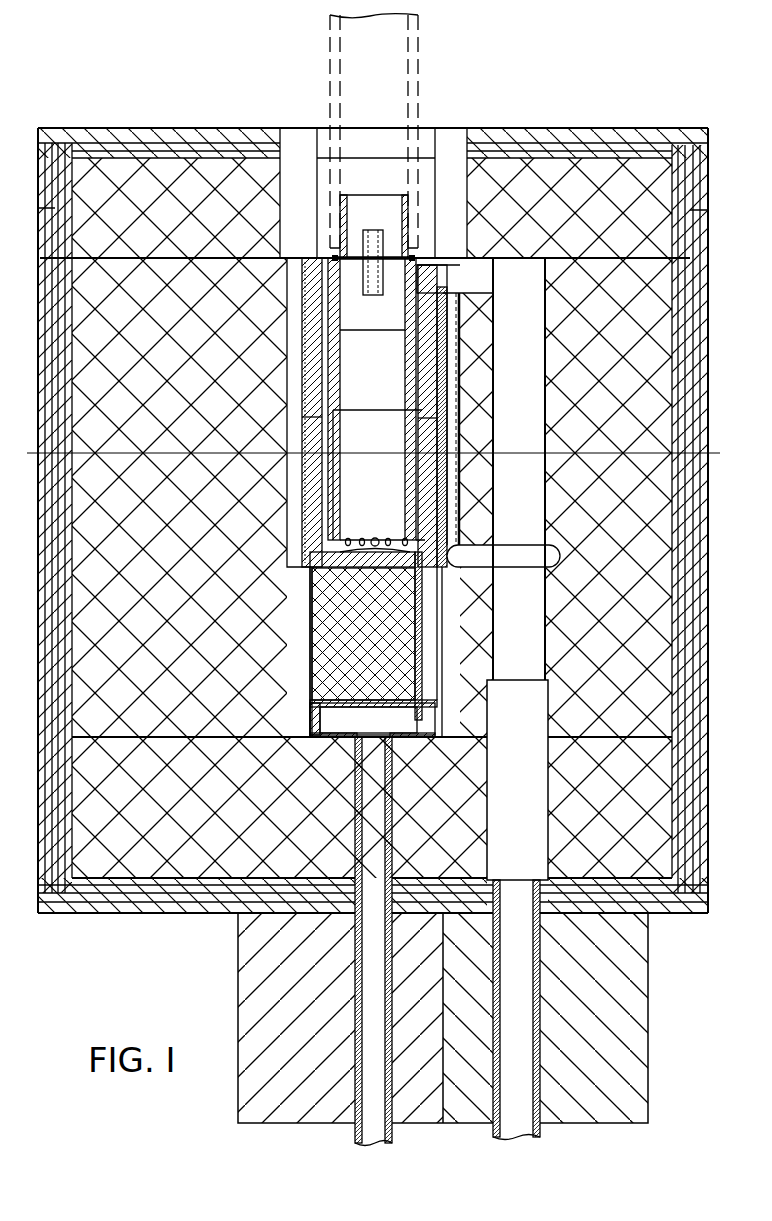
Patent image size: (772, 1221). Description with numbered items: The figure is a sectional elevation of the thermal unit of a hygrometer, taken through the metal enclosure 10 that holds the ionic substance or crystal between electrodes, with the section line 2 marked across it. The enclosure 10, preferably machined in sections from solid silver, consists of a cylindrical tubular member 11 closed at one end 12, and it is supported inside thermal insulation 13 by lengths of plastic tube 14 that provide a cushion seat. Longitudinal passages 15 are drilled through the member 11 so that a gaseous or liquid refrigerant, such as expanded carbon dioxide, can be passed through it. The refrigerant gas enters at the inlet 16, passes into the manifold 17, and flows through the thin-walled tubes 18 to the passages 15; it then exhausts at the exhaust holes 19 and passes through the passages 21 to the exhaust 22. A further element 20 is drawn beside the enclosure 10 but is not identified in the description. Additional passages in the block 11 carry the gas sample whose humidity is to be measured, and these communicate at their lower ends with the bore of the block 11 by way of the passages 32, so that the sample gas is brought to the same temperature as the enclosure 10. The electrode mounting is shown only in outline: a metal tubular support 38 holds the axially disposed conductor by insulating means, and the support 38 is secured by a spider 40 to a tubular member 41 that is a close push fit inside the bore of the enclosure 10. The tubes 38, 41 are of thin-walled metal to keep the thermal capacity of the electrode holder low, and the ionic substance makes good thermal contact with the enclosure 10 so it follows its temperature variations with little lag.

The section line 2- 2 is at (718, 487).
The metal enclosure 10 is at (372, 435).
The cylindrical tubular member 11 is at (405, 350).
The closed end 12 is at (300, 582).
The thermal insulation 13 is at (372, 518).
The plastic tube 14 is at (453, 513).
The longitudinal passages 15 is at (425, 287).
The refrigerant gas inlet 16 is at (373, 785).
The manifold 17 is at (325, 717).
The thin-walled tubes 18 is at (422, 617).
The exhaust holes 19 is at (440, 273).
The insulating block 20 is at (453, 425).
The passages 21 is at (517, 569).
The exhaust 22 is at (516, 1010).
The passages 32 is at (388, 538).
The metal tubular support 38 is at (362, 285).
The spider 40 is at (397, 250).
The tubular member 41 is at (347, 237).